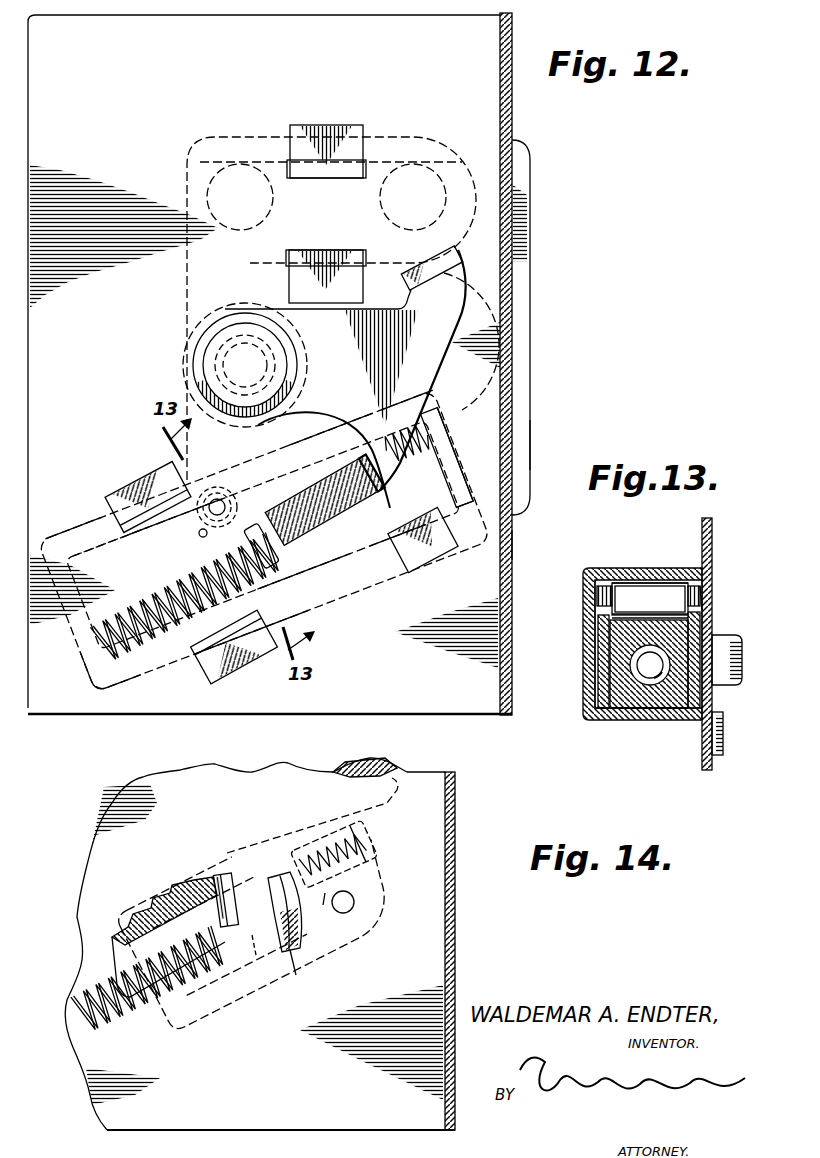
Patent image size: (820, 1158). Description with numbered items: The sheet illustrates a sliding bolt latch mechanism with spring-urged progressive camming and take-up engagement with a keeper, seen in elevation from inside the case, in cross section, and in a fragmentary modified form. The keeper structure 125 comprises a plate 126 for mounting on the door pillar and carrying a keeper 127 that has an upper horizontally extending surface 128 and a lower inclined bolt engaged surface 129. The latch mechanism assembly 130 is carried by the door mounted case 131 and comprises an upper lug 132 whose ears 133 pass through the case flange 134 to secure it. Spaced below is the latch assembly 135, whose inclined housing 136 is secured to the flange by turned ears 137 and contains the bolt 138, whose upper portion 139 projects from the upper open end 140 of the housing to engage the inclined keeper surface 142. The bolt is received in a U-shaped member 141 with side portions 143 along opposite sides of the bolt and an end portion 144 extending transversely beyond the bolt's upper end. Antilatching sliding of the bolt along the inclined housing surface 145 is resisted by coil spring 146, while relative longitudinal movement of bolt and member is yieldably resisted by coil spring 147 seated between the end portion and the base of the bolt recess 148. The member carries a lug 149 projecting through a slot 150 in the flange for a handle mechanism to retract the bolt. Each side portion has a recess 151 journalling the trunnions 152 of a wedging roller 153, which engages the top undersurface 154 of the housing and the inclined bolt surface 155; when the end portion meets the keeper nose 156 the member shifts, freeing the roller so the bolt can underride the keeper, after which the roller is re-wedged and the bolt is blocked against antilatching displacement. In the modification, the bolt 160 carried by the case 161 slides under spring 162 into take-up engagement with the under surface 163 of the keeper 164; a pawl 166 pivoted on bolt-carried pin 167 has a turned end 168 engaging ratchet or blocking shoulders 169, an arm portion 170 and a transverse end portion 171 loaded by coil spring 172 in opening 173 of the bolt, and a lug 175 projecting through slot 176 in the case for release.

In FIG. 12, the keeper structure 125 is at (532, 300).
In FIG. 12, the plate 126 is at (528, 398).
In FIG. 12, the keeper 127 is at (232, 291).
In FIG. 12, the upper horizontally extending surface 128 is at (430, 255).
In FIG. 12, the lower inclined bolt engaged surface 129 is at (448, 420).
In FIG. 12, the latch mechanism assembly 130 is at (172, 388).
In FIG. 12, the case 131 is at (512, 545).
In FIG. 12, the upper lug 132 is at (457, 142).
In FIG. 12, the ears 133 is at (355, 133).
In FIG. 12, the case flange 134 is at (270, 364).
In FIG. 13, the case flange 134 is at (712, 540).
In FIG. 12, the latch assembly 135 is at (145, 668).
In FIG. 13, the latch assembly 135 is at (664, 558).
In FIG. 12, the inclined housing 136 is at (105, 685).
In FIG. 13, the inclined housing 136 is at (588, 612).
In FIG. 12, the turned ears 137 is at (120, 495).
In FIG. 13, the turned ears 137 is at (723, 752).
In FIG. 12, the bolt 138 is at (345, 468).
In FIG. 13, the bolt 138 is at (675, 700).
In FIG. 12, the upper portion 139 is at (368, 425).
In FIG. 12, the upper open end 140 is at (290, 458).
In FIG. 12, the U-shaped member 141 is at (438, 432).
In FIG. 13, the U-shaped member 141 is at (600, 683).
In FIG. 12, the inclined keeper surface 142 is at (437, 410).
In FIG. 12, the side portions 143 is at (190, 540).
In FIG. 13, the side portions 143 is at (603, 645).
In FIG. 12, the end portion 144 is at (442, 448).
In FIG. 12, the inclined housing surface 145 is at (290, 590).
In FIG. 13, the inclined housing surface 145 is at (645, 688).
In FIG. 12, the coil spring 146 is at (100, 650).
In FIG. 13, the coil spring 146 is at (600, 720).
In FIG. 12, the coil spring 147 is at (455, 497).
In FIG. 12, the bolt recess 148 is at (380, 530).
In FIG. 12, the lug 149 is at (364, 485).
In FIG. 13, the lug 149 is at (728, 685).
In FIG. 12, the slot 150 is at (305, 540).
In FIG. 12, the recess 151 is at (276, 546).
In FIG. 13, the recess 151 is at (702, 600).
In FIG. 12, the trunnions 152 is at (217, 495).
In FIG. 13, the trunnions 152 is at (598, 596).
In FIG. 12, the wedging roller 153 is at (175, 517).
In FIG. 13, the wedging roller 153 is at (650, 600).
In FIG. 12, the top undersurface 154 is at (100, 552).
In FIG. 13, the top undersurface 154 is at (627, 583).
In FIG. 12, the inclined bolt surface 155 is at (207, 533).
In FIG. 13, the inclined bolt surface 155 is at (672, 620).
In FIG. 12, the keeper nose 156 is at (275, 420).
In FIG. 14, the bolt 160 is at (205, 1022).
In FIG. 14, the case 161 is at (437, 948).
In FIG. 14, the spring 162 is at (72, 1045).
In FIG. 14, the under surface 163 is at (390, 805).
In FIG. 14, the keeper 164 is at (380, 765).
In FIG. 14, the pawl 166 is at (256, 955).
In FIG. 14, the pin 167 is at (343, 902).
In FIG. 14, the turned end 168 is at (215, 872).
In FIG. 14, the ratchet or blocking shoulders 169 is at (190, 893).
In FIG. 14, the arm portion 170 is at (345, 838).
In FIG. 14, the transverse end portion 171 is at (372, 855).
In FIG. 14, the coil spring 172 is at (375, 868).
In FIG. 14, the opening 173 is at (323, 905).
In FIG. 14, the lug 175 is at (280, 878).
In FIG. 14, the slot 176 is at (305, 971).